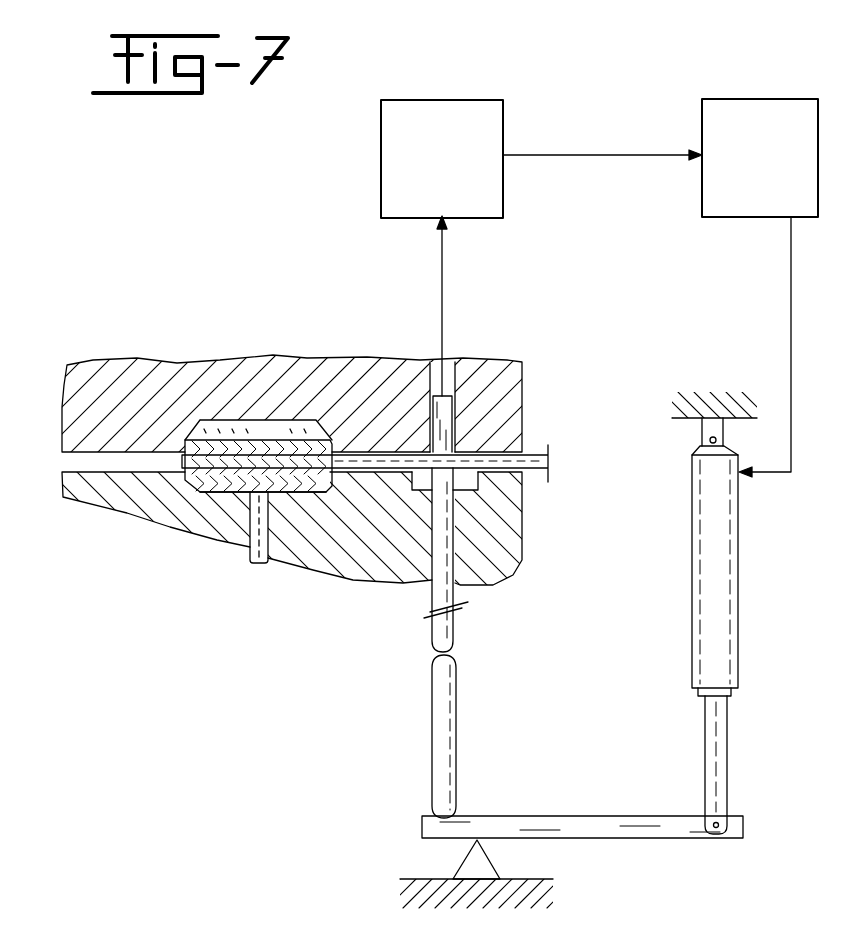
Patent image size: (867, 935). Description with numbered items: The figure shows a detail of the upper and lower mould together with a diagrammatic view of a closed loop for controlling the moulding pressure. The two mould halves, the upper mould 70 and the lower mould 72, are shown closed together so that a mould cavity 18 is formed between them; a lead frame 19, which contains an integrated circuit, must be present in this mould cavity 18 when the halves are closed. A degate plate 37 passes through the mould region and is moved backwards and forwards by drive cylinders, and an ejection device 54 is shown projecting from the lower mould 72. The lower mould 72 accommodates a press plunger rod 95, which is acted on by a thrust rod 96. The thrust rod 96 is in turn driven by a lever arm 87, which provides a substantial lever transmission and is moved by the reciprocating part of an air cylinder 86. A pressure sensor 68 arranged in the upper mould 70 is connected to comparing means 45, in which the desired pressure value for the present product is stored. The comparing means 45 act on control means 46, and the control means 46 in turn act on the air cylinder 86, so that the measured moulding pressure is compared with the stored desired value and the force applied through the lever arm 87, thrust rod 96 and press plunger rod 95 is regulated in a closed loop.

The upper mould 70 is at (100, 421).
The lower mould 72 is at (125, 492).
The mould cavity 18 is at (290, 437).
The lead frame 19 is at (222, 490).
The ejection device 54 is at (258, 564).
The degate plate 37 is at (548, 440).
The pressure sensor 68 is at (447, 414).
The comparing means 45 is at (398, 145).
The control means 46 is at (725, 120).
The press plunger rod 95 is at (427, 602).
The thrust rod 96 is at (445, 727).
The air cylinder 86 is at (712, 589).
The lever arm 87 is at (654, 838).